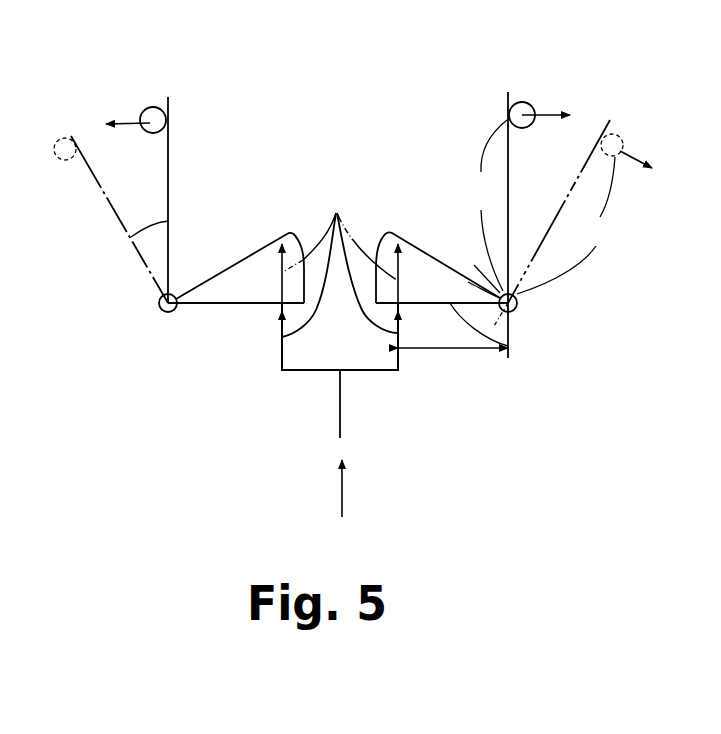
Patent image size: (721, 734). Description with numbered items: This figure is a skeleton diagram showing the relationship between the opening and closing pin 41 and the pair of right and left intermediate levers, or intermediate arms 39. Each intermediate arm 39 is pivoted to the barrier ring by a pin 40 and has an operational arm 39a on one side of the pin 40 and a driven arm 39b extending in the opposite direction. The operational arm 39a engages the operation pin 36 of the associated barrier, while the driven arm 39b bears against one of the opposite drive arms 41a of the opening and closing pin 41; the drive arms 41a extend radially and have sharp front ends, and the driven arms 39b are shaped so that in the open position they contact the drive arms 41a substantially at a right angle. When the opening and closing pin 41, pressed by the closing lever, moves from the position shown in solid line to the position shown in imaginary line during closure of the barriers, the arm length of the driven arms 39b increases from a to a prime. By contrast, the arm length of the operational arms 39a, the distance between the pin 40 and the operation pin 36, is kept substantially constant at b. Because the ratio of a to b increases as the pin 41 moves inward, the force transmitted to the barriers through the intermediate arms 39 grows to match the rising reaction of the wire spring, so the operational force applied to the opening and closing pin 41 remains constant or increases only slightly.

The operation pin 36 is at (142, 113).
The operational arm 39a is at (176, 216).
The pin 40 is at (164, 311).
The driven arm 39b is at (243, 306).
The intermediate arm 39 is at (516, 309).
The drive arm 41a is at (340, 258).
The opening and closing pin 41 is at (340, 422).
The arm length of the driven arms a is at (453, 315).
The arm length of the operational arms b is at (543, 207).